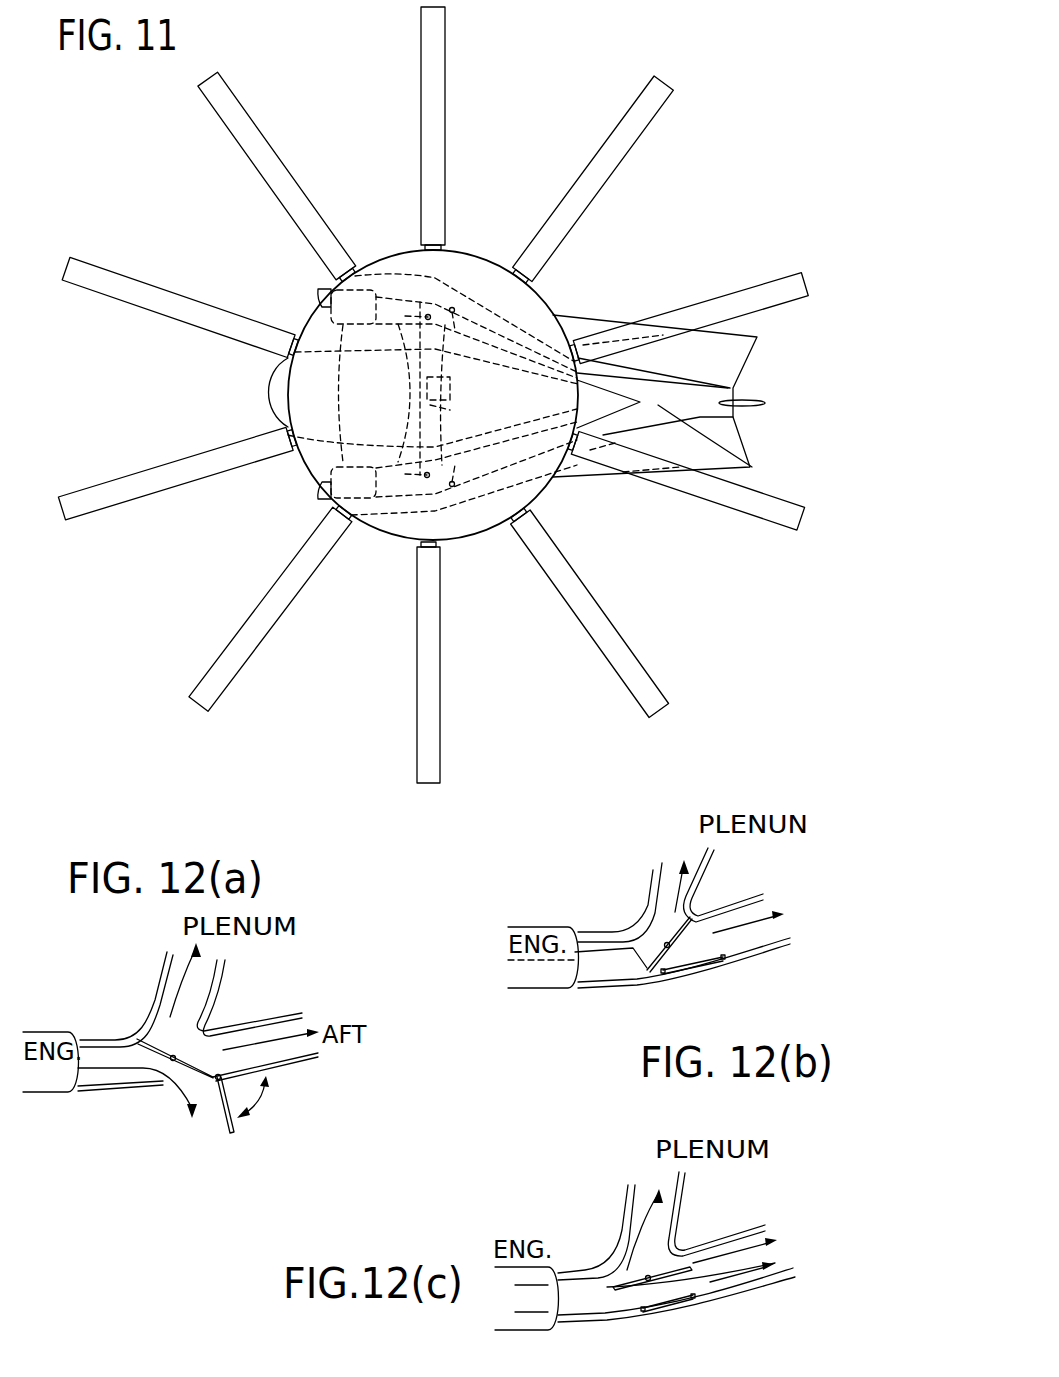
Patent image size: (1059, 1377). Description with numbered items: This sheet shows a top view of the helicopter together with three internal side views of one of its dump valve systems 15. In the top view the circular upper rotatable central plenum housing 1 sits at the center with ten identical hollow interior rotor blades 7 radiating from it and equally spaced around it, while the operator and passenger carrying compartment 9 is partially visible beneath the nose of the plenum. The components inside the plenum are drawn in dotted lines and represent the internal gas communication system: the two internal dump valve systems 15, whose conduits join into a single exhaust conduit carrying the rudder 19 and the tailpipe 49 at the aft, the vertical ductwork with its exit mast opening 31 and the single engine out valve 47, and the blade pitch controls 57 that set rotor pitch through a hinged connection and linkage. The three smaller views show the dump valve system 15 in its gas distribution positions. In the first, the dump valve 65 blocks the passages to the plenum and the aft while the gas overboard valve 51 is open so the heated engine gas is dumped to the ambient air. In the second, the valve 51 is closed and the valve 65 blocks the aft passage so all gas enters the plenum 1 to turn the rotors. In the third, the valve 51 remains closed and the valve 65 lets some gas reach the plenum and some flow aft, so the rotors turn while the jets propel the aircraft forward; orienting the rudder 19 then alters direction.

In FIG. 11, the upper rotatable central plenum housing 1 is at (552, 292).
In FIG. 11, the hollow interior rotor blades 7 is at (700, 318).
In FIG. 11, the operator and passenger carrying compartment 9 is at (270, 394).
In FIG. 11, the dump valve system 15 is at (484, 394).
In FIG. 11, the rudder 19 is at (745, 399).
In FIG. 11, the exit mast opening 31 is at (440, 379).
In FIG. 11, the engine out valve 47 is at (450, 400).
In FIG. 11, the tailpipe 49 is at (690, 423).
In FIG. 12A, the gas overboard valve 51 is at (230, 1127).
In FIG. 12B, the gas overboard valve 51 is at (690, 968).
In FIG. 12C, the gas overboard valve 51 is at (663, 1310).
In FIG. 11, the blade pitch control 57 is at (453, 308).
In FIG. 12A, the dump valve 65 is at (205, 1032).
In FIG. 12B, the dump valve 65 is at (665, 963).
In FIG. 12C, the dump valve 65 is at (672, 1265).